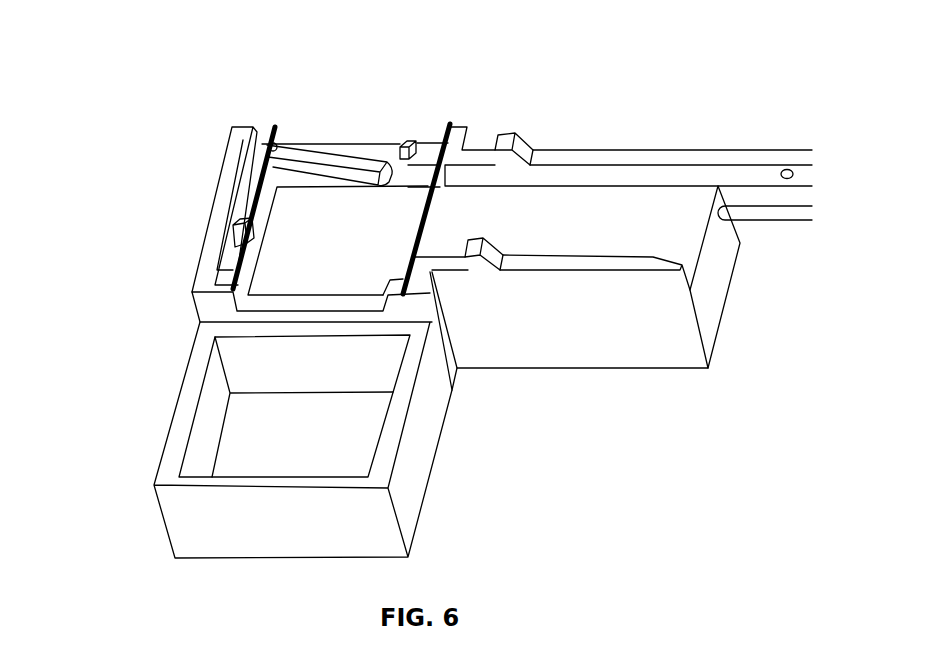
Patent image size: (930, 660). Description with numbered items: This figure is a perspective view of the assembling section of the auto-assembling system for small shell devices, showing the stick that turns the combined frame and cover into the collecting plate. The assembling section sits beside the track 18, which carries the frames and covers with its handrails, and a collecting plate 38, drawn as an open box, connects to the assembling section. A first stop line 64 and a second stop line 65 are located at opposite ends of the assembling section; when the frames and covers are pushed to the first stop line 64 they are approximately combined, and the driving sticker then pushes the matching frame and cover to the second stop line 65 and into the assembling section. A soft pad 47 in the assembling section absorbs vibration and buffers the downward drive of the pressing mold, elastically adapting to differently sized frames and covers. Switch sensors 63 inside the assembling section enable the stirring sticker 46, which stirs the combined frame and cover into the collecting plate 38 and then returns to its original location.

The track 18 is at (562, 207).
The collecting plate 38 is at (410, 482).
The stirring sticker 46 is at (297, 150).
The soft pad 47 is at (312, 260).
The switch sensor 63 is at (408, 142).
The first stop line 64 is at (452, 123).
The second stop line 65 is at (275, 130).